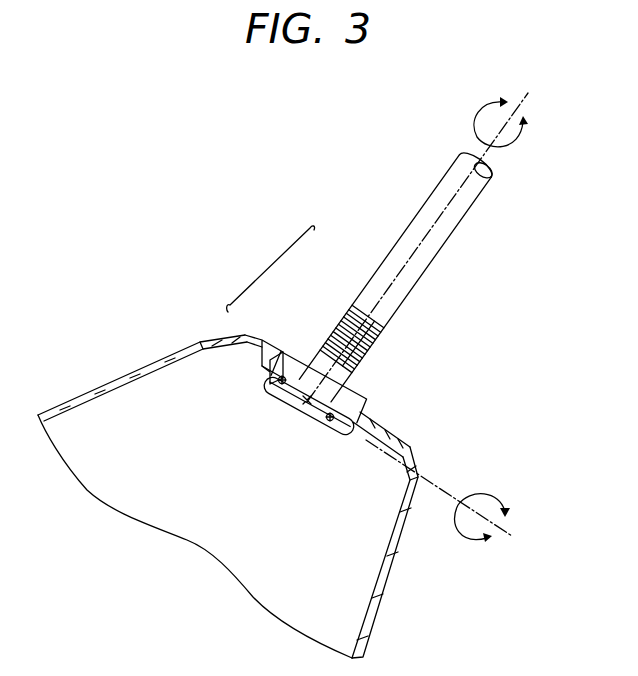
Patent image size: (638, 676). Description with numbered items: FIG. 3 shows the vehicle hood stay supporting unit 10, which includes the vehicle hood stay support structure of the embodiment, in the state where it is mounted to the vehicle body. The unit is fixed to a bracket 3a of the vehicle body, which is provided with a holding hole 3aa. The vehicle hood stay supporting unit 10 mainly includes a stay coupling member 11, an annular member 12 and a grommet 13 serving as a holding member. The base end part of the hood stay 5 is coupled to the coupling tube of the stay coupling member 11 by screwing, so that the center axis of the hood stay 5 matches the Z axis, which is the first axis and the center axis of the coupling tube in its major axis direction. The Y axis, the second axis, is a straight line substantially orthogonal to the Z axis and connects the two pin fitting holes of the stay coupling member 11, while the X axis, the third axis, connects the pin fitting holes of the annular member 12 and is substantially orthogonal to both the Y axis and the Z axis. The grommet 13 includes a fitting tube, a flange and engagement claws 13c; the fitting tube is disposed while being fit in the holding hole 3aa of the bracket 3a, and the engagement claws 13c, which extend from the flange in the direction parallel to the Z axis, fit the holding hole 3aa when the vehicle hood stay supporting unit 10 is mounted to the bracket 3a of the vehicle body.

The bracket 3a is at (153, 363).
The holding hole 3aa is at (378, 410).
The hood stay 5 is at (437, 225).
The vehicle hood stay supporting unit 10 is at (258, 256).
The stay coupling member 11 is at (327, 327).
The annular member 12 is at (263, 347).
The grommet 13 is at (293, 347).
The engagement claws 13c is at (260, 372).
The X axis X is at (296, 410).
The Y axis Y is at (508, 537).
The Z axis Z is at (520, 100).